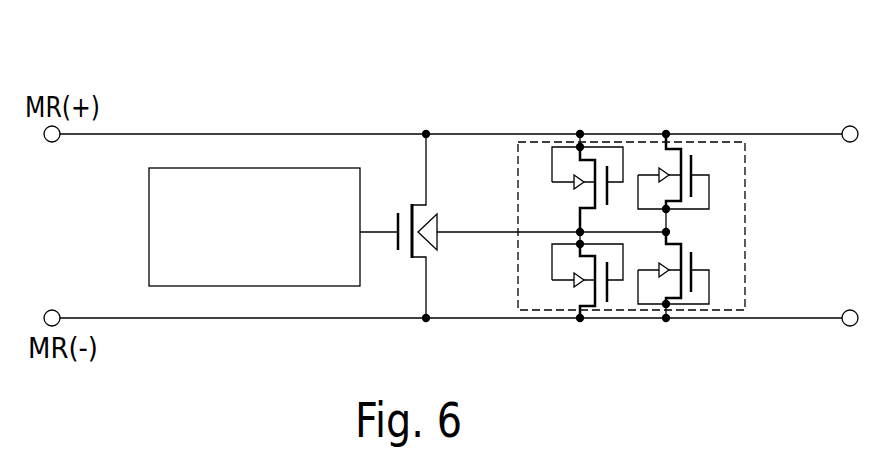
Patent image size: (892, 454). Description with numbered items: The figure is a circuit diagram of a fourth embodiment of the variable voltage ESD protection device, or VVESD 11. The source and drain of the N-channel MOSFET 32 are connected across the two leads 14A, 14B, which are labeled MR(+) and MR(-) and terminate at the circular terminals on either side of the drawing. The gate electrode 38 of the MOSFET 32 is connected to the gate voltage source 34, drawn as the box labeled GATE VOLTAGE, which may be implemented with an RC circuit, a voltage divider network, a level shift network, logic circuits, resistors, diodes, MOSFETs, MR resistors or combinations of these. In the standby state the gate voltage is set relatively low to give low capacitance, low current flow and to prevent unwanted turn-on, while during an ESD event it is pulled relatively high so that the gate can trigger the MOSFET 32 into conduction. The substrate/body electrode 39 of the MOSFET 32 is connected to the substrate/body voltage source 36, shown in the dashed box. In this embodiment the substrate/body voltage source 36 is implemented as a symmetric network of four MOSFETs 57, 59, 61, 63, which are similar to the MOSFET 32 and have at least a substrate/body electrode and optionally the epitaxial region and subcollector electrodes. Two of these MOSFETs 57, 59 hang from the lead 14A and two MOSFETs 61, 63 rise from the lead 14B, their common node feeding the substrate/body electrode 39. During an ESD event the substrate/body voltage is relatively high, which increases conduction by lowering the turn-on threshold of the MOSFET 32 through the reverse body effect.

The VVESD 11 is at (377, 87).
The lead 14A is at (775, 132).
The lead 14B is at (783, 322).
The N-channel MOSFET 32 is at (432, 183).
The gate voltage source 34 is at (272, 177).
The substrate/body voltage source 36 is at (632, 142).
The gate electrode 38 is at (383, 238).
The substrate/body electrode 39 is at (467, 236).
The MOSFET 57 is at (547, 178).
The MOSFET 59 is at (714, 187).
The MOSFET 61 is at (556, 294).
The MOSFET 63 is at (713, 288).